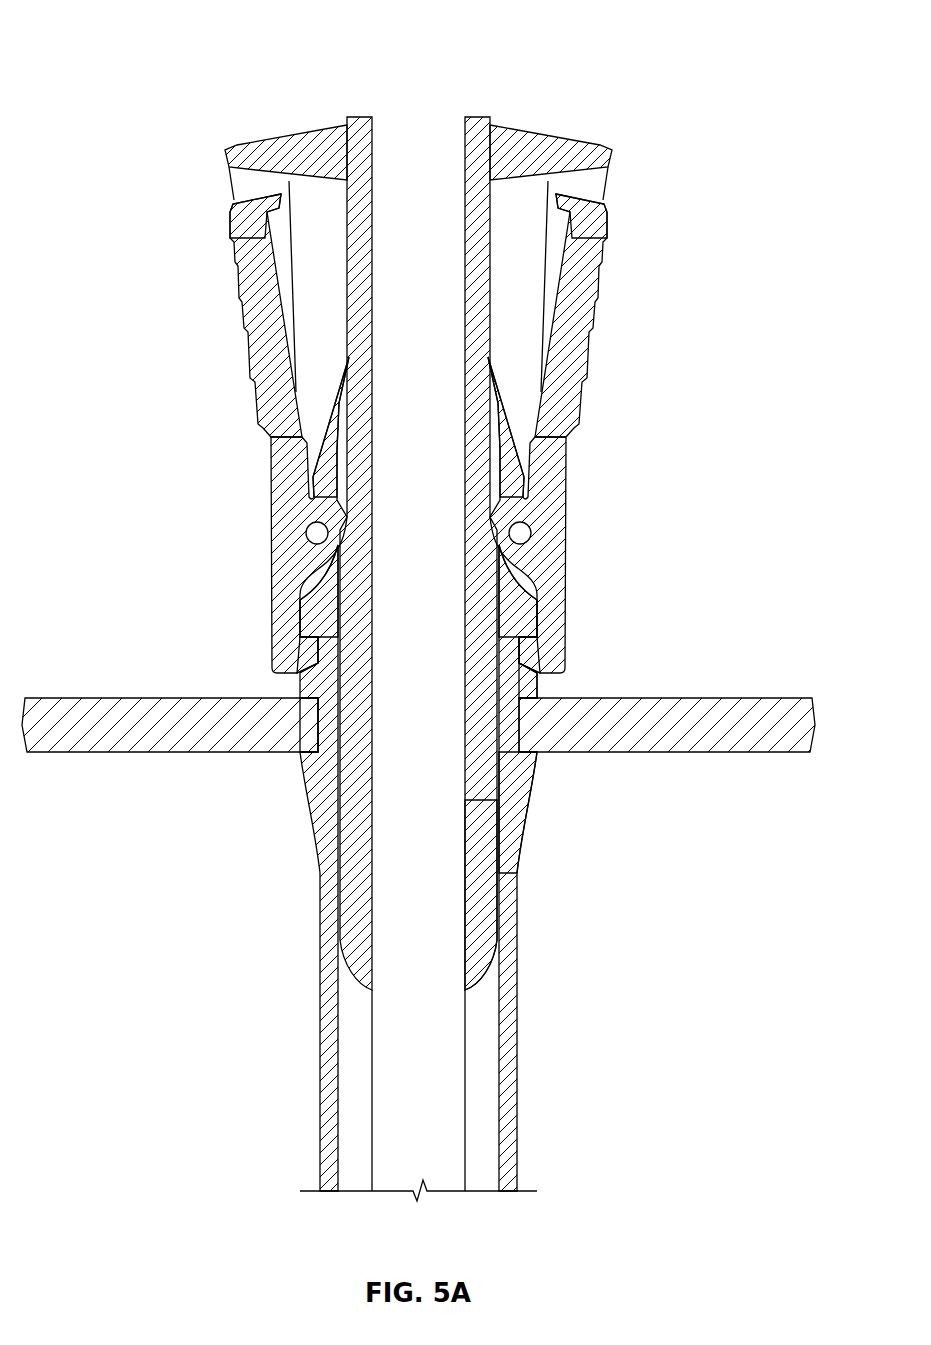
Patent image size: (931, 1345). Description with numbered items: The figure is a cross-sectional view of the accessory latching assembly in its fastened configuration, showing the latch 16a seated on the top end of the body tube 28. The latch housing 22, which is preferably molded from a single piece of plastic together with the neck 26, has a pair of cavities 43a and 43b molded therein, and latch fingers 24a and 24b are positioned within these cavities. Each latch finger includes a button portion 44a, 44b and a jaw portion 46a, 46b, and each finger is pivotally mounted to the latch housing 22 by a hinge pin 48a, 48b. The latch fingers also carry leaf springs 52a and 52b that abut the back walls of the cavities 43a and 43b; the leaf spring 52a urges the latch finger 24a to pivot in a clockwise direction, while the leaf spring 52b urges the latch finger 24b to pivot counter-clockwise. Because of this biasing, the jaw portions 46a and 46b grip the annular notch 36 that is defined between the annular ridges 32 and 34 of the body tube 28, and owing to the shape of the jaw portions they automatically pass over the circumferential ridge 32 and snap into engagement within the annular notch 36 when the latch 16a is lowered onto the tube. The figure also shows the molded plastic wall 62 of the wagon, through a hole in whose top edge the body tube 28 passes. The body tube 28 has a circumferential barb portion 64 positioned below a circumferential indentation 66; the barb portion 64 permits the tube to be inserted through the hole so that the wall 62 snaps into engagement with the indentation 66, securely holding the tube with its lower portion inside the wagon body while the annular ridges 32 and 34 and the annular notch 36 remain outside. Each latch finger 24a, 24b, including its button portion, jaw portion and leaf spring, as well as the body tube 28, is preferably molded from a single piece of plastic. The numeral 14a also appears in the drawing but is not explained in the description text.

The latch 16a is at (206, 43).
The tubular member 14a is at (440, 113).
The latch housing 22 is at (554, 133).
The latch finger 24a is at (614, 427).
The latch finger 24b is at (218, 427).
The cavity 43a is at (530, 251).
The cavity 43b is at (300, 250).
The button portion 44a is at (607, 284).
The button portion 44b is at (232, 258).
The leaf spring 52a is at (490, 400).
The leaf spring 52b is at (345, 397).
The hinge pin 48a is at (520, 533).
The hinge pin 48b is at (317, 533).
The annular ridge 32 is at (540, 620).
The annular notch 36 is at (298, 622).
The jaw portion 46a is at (545, 650).
The jaw portion 46b is at (290, 652).
The annular ridge 34 is at (535, 695).
The wall 62 is at (660, 700).
The circumferential indentation 66 is at (310, 752).
The barb portion 64 is at (530, 800).
The neck 26 is at (478, 875).
The body tube 28 is at (422, 868).